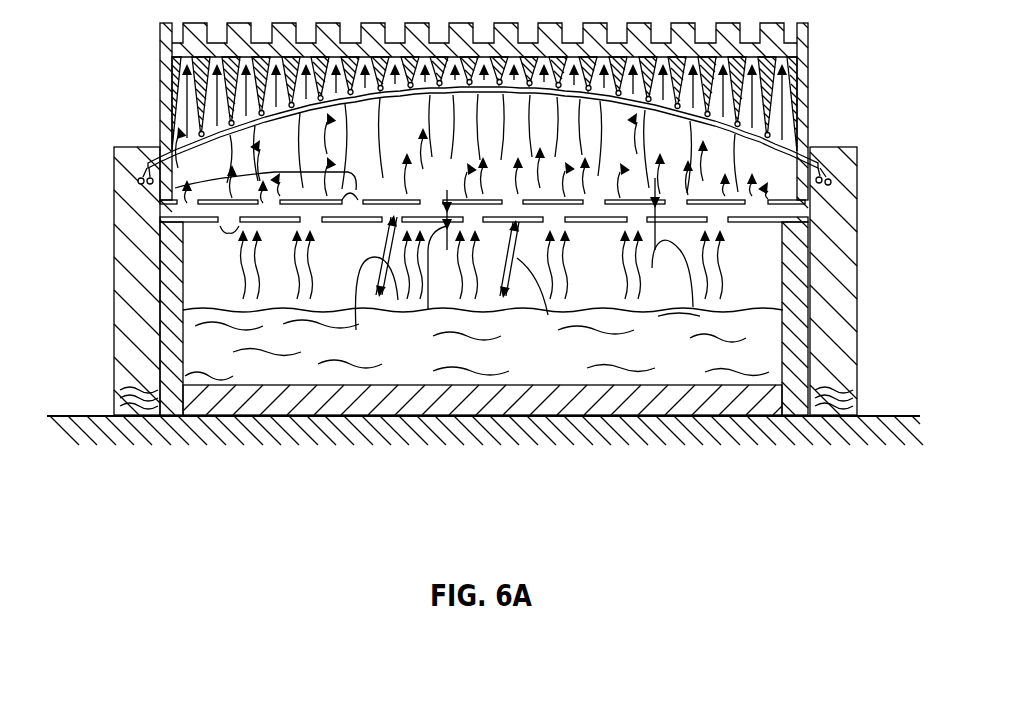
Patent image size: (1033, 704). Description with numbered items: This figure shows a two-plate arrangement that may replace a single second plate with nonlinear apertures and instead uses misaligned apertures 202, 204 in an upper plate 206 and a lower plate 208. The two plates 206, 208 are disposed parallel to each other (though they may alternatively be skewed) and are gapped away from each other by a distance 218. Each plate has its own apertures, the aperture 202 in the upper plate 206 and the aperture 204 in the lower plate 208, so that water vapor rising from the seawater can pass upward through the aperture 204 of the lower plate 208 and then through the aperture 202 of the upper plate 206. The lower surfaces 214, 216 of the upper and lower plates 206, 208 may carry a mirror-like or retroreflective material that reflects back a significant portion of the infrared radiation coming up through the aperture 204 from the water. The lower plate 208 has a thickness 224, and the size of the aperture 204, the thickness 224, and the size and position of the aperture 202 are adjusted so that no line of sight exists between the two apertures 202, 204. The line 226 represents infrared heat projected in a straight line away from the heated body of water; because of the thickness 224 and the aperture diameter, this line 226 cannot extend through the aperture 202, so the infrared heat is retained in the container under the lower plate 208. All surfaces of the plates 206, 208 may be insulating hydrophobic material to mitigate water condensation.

The aperture of the upper plate 202 is at (181, 150).
The aperture of the lower plate 204 is at (229, 239).
The upper plate 206 is at (790, 209).
The lower plate 208 is at (768, 224).
The lower surface of the upper plate 214 is at (573, 203).
The lower surface of the lower plate 216 is at (492, 222).
The distance 218 is at (693, 307).
The thickness 224 is at (428, 310).
The line 226 is at (356, 330).